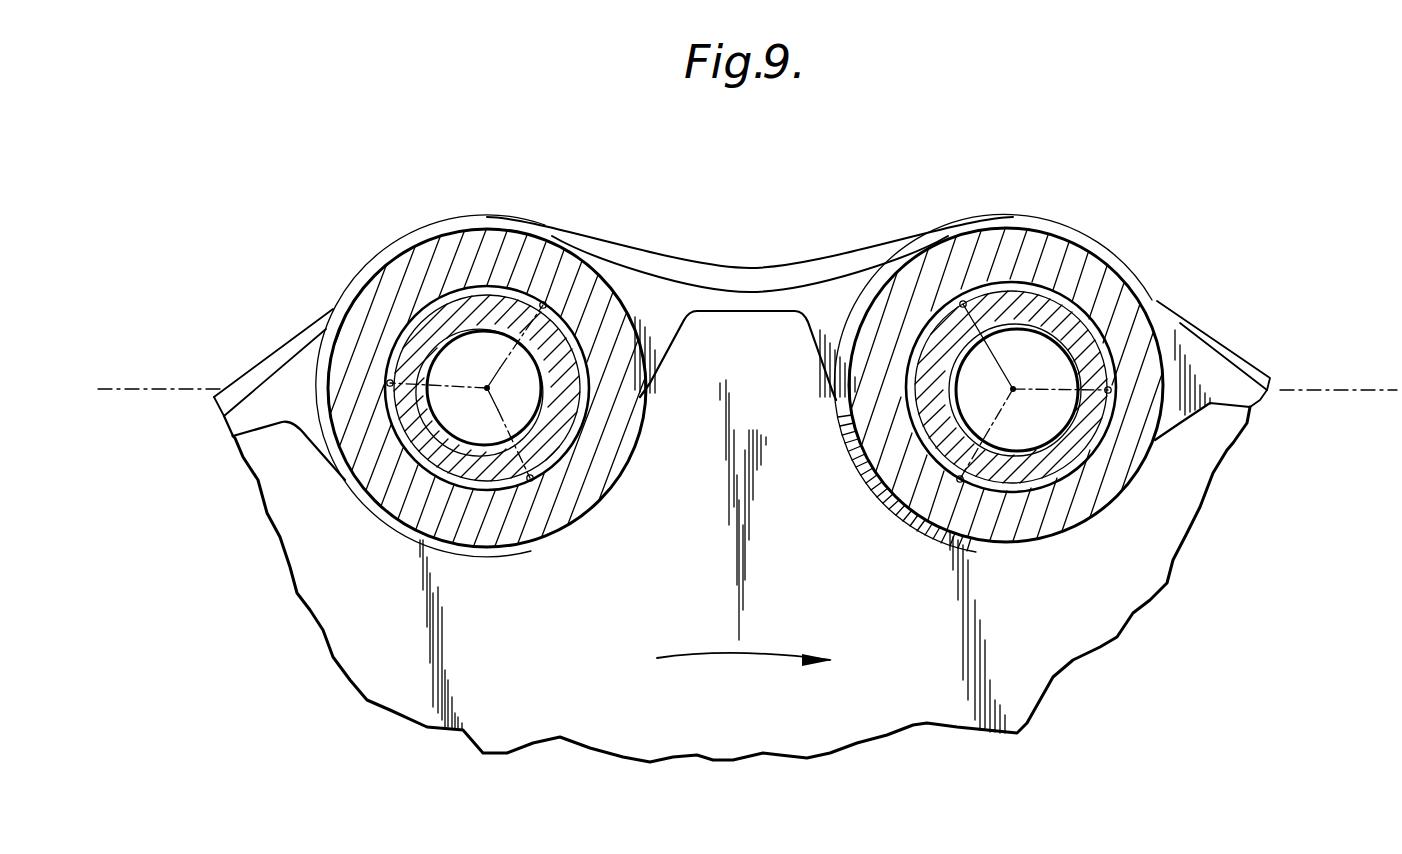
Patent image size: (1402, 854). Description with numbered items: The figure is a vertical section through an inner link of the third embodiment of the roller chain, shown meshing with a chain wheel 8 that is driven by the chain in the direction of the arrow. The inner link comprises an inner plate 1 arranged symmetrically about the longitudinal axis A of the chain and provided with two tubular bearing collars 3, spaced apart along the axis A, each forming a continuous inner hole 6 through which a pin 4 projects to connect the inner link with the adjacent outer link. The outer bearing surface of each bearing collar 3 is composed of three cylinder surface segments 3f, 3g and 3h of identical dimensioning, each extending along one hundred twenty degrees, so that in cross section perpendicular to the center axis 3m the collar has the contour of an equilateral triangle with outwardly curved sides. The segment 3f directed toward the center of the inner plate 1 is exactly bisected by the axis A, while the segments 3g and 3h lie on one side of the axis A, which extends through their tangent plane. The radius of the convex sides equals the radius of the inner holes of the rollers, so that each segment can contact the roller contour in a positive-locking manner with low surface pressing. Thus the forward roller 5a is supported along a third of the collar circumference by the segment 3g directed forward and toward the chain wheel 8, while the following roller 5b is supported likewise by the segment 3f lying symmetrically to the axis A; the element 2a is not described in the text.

The inner plate 1 is at (738, 277).
The frame arm 2a is at (264, 372).
The bearing collar 3 is at (540, 447).
The cylinder surface segment 3f is at (552, 404).
The cylinder surface segment 3g is at (413, 530).
The cylinder surface segment 3h is at (421, 316).
The center axis 3m is at (487, 388).
The pin 4 is at (463, 417).
The forward roller 5a is at (1107, 327).
The following roller 5b is at (540, 272).
The inner hole 6 is at (547, 395).
The chain wheel 8 is at (1103, 623).
The longitudinal axis A is at (133, 390).